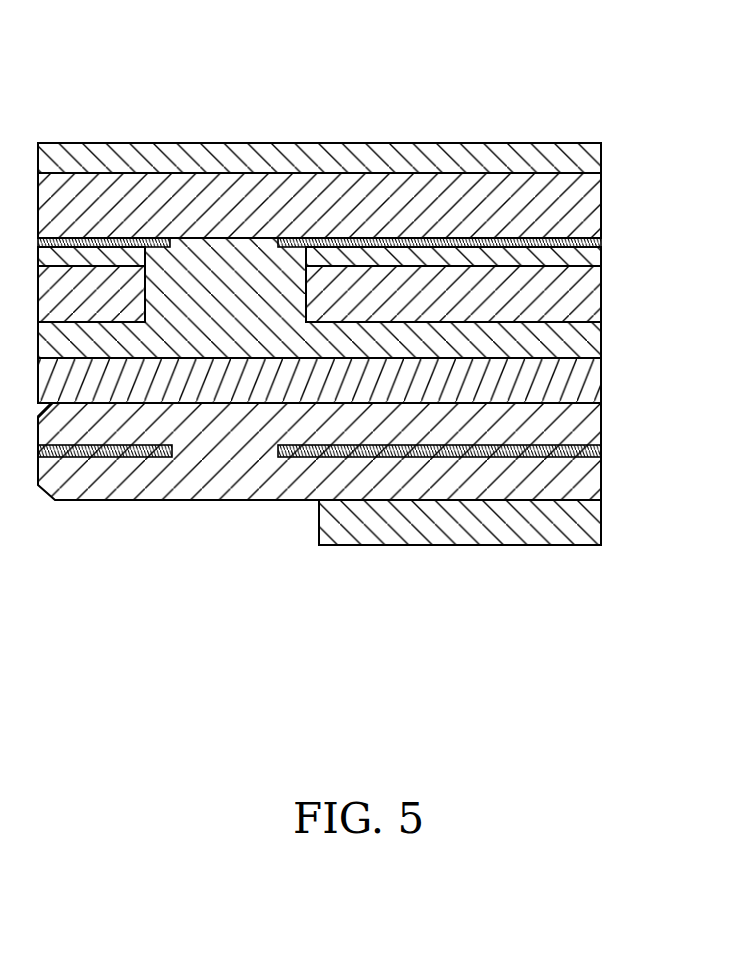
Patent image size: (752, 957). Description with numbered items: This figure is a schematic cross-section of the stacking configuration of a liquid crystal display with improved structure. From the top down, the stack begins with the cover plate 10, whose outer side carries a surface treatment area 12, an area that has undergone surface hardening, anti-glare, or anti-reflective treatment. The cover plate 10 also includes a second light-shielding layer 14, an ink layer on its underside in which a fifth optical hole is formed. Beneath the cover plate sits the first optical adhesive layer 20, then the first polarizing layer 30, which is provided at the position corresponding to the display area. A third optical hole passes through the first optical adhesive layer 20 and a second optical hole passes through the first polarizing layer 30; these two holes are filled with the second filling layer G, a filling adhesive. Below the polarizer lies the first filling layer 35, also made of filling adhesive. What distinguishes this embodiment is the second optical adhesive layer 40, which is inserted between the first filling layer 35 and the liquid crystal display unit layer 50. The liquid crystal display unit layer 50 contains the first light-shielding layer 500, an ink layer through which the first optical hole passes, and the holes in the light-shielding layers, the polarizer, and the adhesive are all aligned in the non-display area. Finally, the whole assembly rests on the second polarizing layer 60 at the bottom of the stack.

The surface treatment area 12 is at (601, 163).
The cover plate 10 is at (601, 205).
The second light-shielding layer 14 is at (601, 231).
The first optical adhesive layer 20 is at (601, 258).
The first polarizing layer 30 is at (601, 292).
The first filling layer 35 is at (601, 343).
The second optical adhesive layer 40 is at (601, 388).
The first light-shielding layer 500 is at (601, 452).
The liquid crystal display unit layer 50 is at (601, 488).
The second polarizing layer 60 is at (601, 526).
The second filling layer G is at (192, 262).